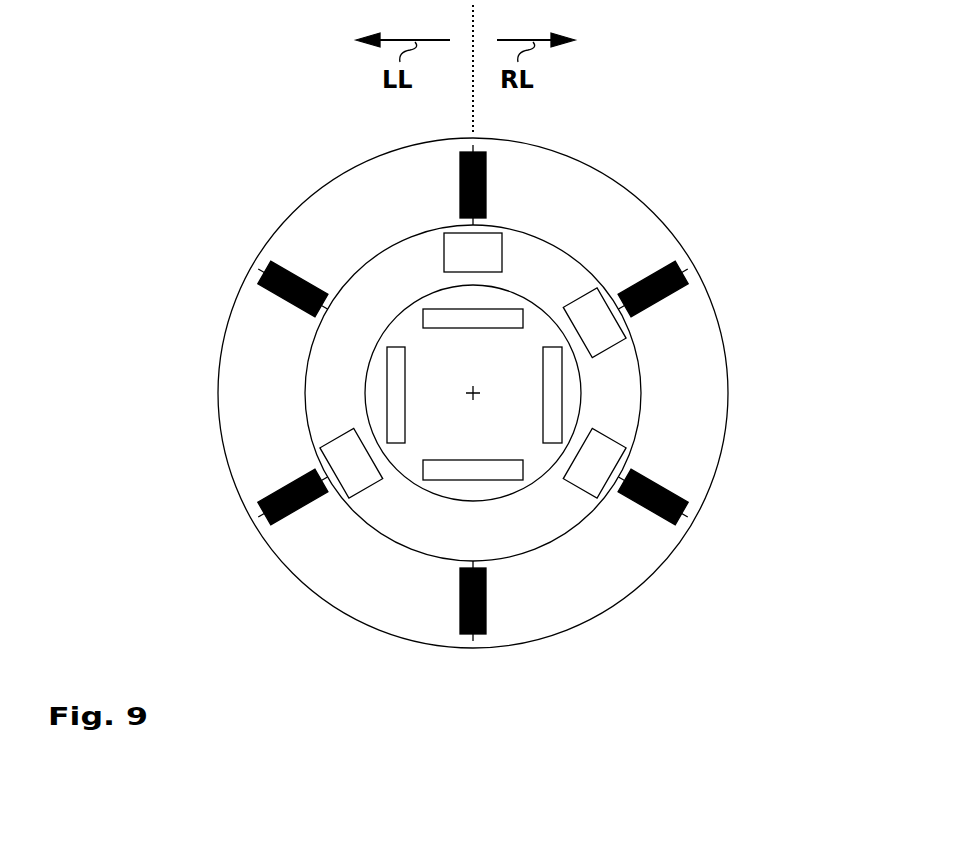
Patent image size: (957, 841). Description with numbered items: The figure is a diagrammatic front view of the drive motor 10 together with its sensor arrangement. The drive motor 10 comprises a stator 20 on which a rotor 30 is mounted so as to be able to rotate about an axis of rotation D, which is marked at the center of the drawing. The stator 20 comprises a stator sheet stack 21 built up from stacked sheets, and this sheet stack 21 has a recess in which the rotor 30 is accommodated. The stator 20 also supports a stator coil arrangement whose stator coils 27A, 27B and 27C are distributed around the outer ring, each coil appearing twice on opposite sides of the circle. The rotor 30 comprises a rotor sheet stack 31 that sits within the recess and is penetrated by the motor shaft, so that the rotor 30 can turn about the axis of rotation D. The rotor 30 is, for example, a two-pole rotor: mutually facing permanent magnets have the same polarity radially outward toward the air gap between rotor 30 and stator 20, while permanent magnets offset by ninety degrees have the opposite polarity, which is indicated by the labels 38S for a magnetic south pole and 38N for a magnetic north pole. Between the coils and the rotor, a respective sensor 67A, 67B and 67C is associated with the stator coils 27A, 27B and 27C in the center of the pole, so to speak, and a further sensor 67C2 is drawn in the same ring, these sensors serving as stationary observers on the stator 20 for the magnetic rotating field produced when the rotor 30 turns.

The drive motor 10 is at (274, 213).
The stator 20 is at (674, 216).
The stator sheet stack 21 is at (595, 184).
The stator coil 27A is at (300, 285).
The stator coil 27B is at (484, 152).
The stator coil 27C is at (688, 276).
The rotor 30 is at (512, 499).
The rotor sheet stack 31 is at (535, 472).
The magnetic north pole 38N is at (490, 317).
The magnetic south pole 38S is at (400, 428).
The sensor 67A is at (485, 245).
The sensor 67B is at (612, 457).
The sensor 67C is at (345, 443).
The coil C2 67C2 is at (607, 333).
The axis of rotation D is at (478, 394).